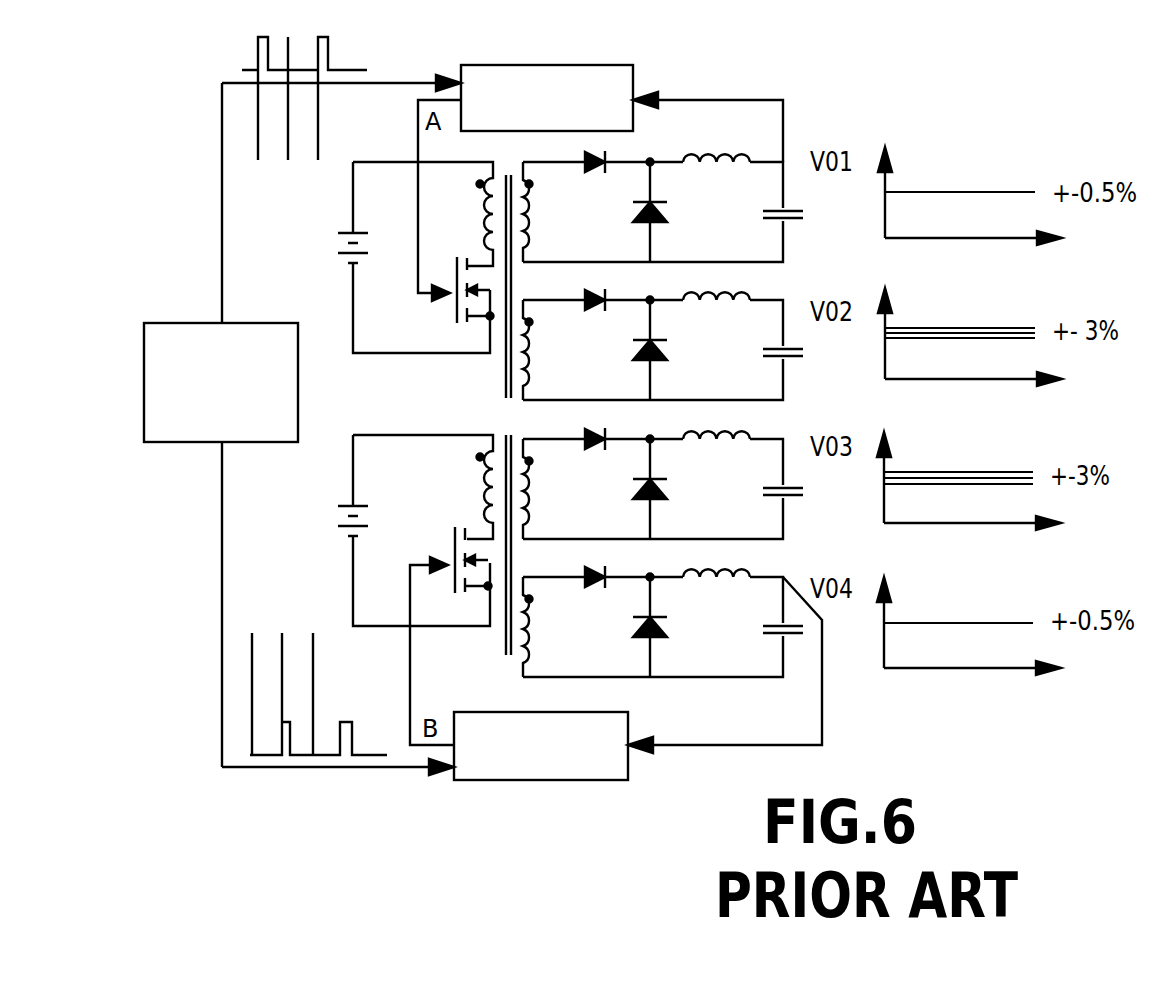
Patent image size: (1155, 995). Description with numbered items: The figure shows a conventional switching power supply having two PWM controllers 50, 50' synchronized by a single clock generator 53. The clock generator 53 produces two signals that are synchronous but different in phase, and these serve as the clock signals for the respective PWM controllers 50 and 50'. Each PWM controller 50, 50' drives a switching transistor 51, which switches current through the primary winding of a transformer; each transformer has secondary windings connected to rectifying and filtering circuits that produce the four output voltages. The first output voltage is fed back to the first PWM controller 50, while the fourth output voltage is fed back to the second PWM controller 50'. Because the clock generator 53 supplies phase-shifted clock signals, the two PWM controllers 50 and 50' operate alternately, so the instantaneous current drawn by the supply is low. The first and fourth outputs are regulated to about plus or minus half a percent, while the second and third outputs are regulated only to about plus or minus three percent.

The PWM controller 50 is at (547, 69).
The second PWM controller 50' is at (541, 775).
The switching transistor 51 is at (460, 520).
The clock generator 53 is at (148, 407).